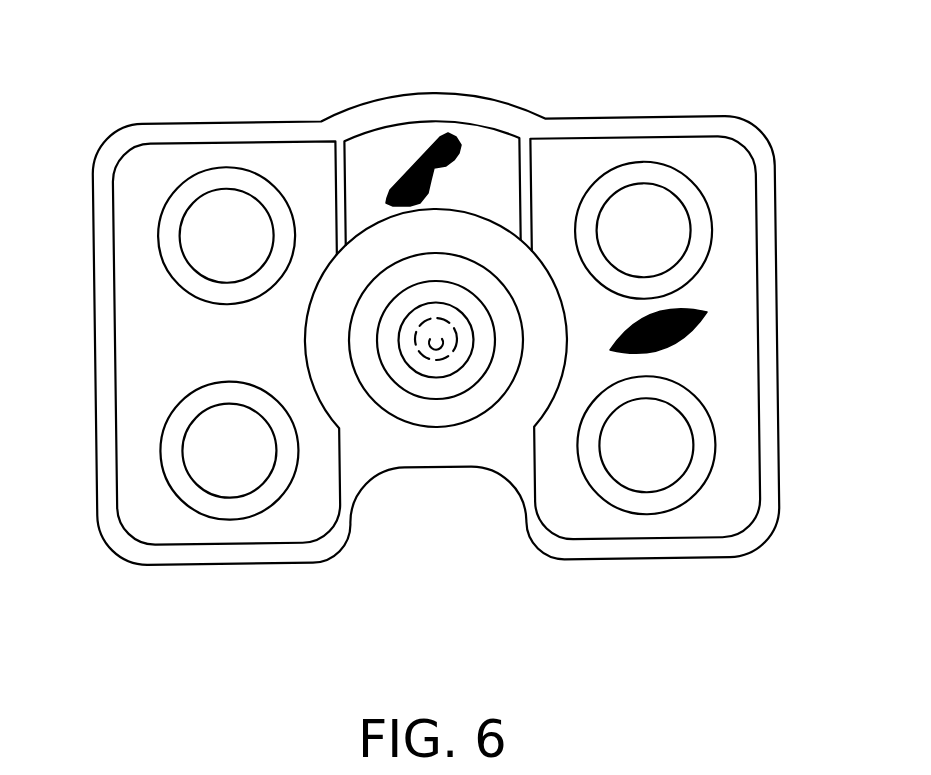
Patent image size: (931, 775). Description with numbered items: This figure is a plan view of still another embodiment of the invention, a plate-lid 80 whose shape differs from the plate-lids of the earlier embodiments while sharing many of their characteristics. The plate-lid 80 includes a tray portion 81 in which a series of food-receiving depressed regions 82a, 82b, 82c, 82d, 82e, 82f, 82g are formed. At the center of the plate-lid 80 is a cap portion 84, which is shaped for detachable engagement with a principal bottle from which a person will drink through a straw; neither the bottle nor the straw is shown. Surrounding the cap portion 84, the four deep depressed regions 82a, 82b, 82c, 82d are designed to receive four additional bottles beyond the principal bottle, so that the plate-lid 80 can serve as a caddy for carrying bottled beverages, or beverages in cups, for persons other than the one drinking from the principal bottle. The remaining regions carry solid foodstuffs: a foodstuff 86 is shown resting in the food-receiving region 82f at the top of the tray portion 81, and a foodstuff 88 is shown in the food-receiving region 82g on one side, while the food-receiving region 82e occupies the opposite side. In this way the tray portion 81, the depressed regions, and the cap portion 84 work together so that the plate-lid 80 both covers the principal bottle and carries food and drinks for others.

The plate-lid 80 is at (446, 356).
The tray portion 81 is at (742, 178).
The deep depressed region 82a is at (218, 205).
The deep depressed region 82b is at (227, 487).
The deep depressed region 82c is at (642, 198).
The deep depressed region 82d is at (635, 480).
The food-receiving depressed region 82e is at (150, 355).
The food-receiving region 82f is at (497, 147).
The food-receiving region 82g is at (743, 365).
The cap portion 84 is at (433, 388).
The foodstuff 86 is at (430, 152).
The foodstuff 88 is at (710, 312).